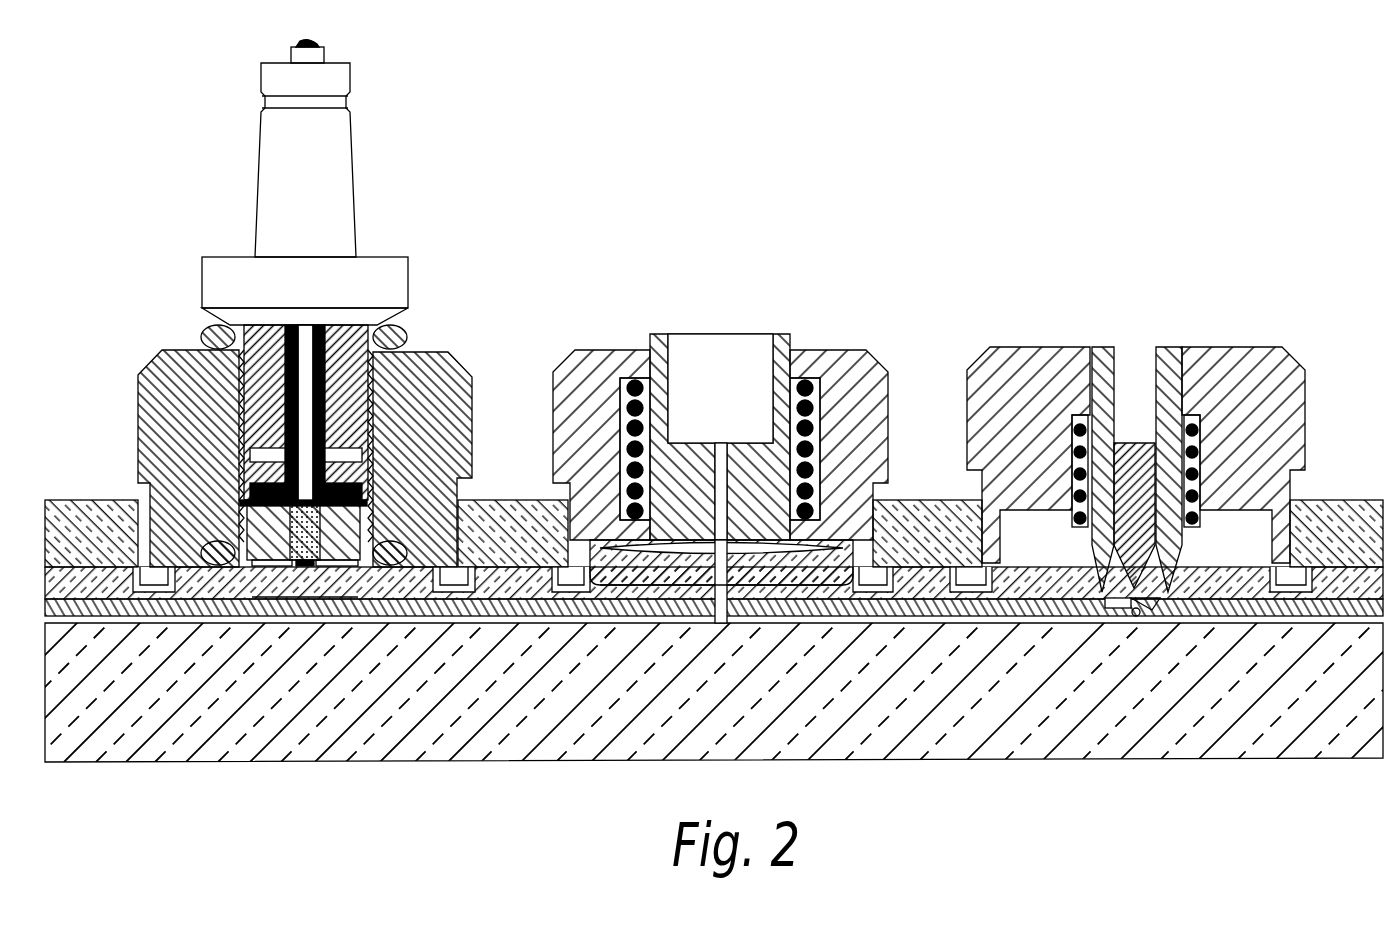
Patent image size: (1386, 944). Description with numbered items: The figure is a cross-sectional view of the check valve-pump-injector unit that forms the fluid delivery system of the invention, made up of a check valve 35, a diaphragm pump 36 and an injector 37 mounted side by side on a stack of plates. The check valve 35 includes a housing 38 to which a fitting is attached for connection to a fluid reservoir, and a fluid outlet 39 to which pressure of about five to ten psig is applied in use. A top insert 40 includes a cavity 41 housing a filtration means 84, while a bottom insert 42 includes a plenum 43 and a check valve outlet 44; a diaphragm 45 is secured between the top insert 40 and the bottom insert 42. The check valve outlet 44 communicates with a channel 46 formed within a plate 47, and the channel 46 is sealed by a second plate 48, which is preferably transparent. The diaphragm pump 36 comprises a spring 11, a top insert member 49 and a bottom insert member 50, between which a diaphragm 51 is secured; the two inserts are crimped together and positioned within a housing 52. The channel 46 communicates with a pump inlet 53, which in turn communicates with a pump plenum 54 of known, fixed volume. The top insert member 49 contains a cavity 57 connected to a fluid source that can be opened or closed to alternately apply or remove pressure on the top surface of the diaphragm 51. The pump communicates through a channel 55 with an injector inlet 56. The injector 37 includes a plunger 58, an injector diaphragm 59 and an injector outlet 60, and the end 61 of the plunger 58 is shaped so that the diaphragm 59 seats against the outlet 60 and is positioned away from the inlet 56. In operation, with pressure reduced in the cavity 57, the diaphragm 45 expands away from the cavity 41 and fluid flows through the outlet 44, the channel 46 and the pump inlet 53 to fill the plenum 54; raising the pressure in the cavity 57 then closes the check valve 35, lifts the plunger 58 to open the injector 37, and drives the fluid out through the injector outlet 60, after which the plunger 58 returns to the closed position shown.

The spring 11 is at (632, 378).
The check valve 35 is at (458, 330).
The diaphragm pump 36 is at (742, 462).
The injector 37 is at (1136, 471).
The housing 38 is at (458, 412).
The fluid outlet 39 is at (305, 345).
The top insert 40 is at (245, 508).
The cavity 41 is at (330, 525).
The bottom insert 42 is at (335, 578).
The plenum 43 is at (362, 590).
The check valve outlet 44 is at (305, 578).
The diaphragm 45 is at (268, 566).
The channel 46 is at (470, 600).
The plate 47 is at (508, 612).
The second plate 48 is at (748, 741).
The top insert member 49 is at (780, 335).
The bottom insert member 50 is at (678, 585).
The diaphragm 51 is at (721, 465).
The housing 52 is at (868, 410).
The pump inlet 53 is at (722, 590).
The pump plenum 54 is at (760, 550).
The channel 55 is at (842, 598).
The injector inlet 56 is at (1105, 600).
The cavity 57 is at (735, 375).
The plunger 58 is at (1132, 440).
The injector diaphragm 59 is at (1115, 605).
The injector outlet 60 is at (1137, 608).
The end of the plunger 61 is at (1158, 605).
The filtration means 84 is at (300, 567).